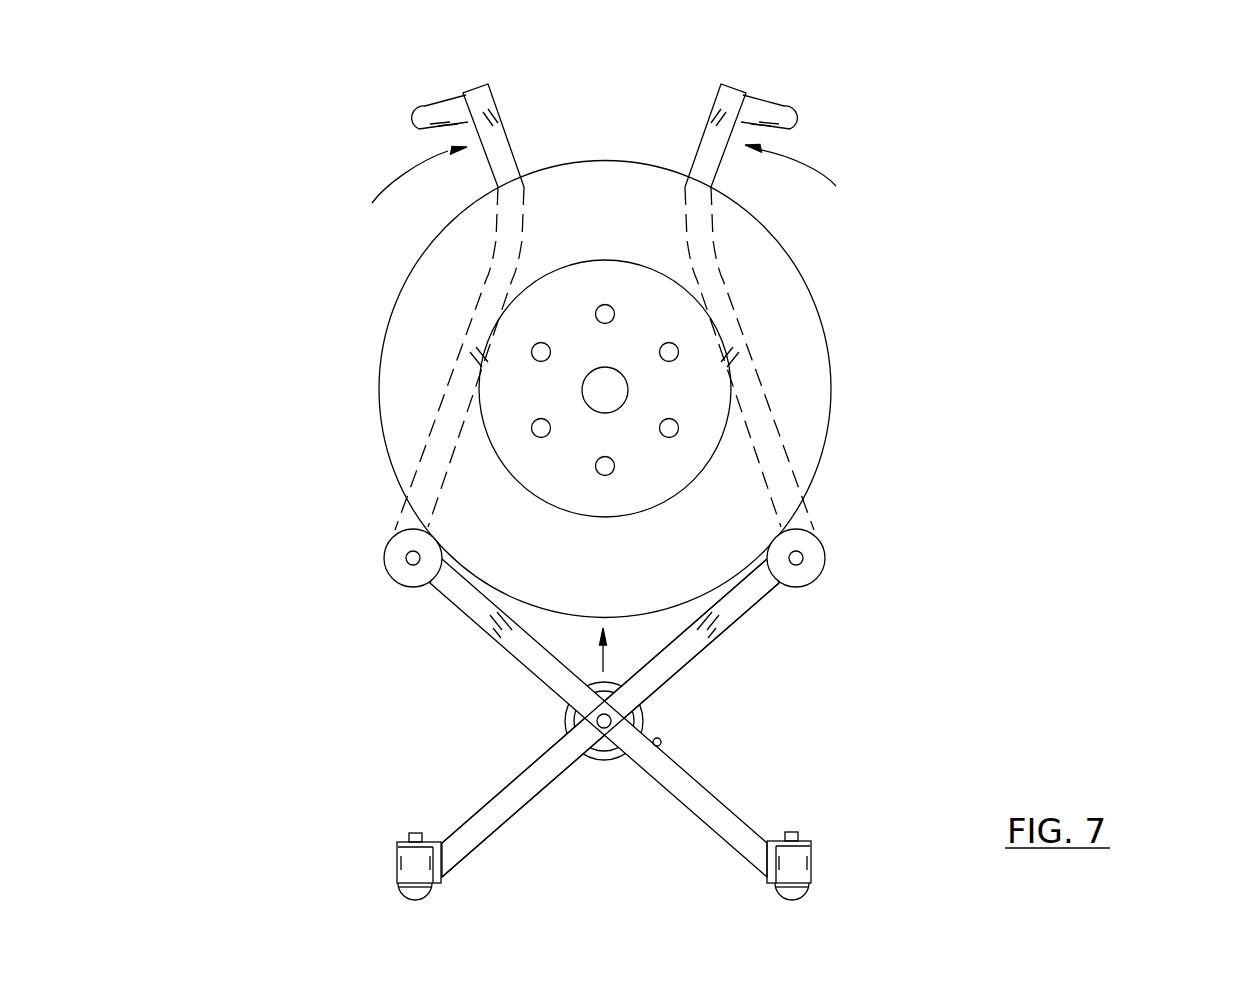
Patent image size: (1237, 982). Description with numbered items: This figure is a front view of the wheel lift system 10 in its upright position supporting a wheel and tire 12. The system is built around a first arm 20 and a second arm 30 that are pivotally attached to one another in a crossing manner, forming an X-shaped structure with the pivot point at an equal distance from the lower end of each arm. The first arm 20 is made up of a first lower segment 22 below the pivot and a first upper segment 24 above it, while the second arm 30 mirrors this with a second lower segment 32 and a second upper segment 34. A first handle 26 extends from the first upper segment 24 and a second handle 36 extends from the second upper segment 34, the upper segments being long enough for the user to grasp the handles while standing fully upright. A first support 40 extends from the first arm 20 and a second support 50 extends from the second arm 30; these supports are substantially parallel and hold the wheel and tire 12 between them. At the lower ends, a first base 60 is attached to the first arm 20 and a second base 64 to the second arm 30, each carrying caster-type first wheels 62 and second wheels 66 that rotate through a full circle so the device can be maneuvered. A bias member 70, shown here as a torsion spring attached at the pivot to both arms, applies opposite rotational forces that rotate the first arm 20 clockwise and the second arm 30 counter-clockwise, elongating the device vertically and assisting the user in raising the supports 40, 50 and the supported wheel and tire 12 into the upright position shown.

The wheel lift system 10 is at (1079, 134).
The wheel and tire 12 is at (606, 160).
The first arm 20 is at (475, 718).
The first lower segment 22 is at (522, 665).
The first upper segment 24 is at (363, 304).
The first handle 26 is at (418, 103).
The second arm 30 is at (709, 718).
The second lower segment 32 is at (720, 636).
The second upper segment 34 is at (819, 295).
The second handle 36 is at (773, 103).
The first support 40 is at (387, 548).
The second support 50 is at (825, 557).
The first base 60 is at (325, 841).
The first wheels 62 is at (415, 900).
The second base 64 is at (853, 825).
The second wheels 66 is at (807, 900).
The bias member 70 is at (609, 758).